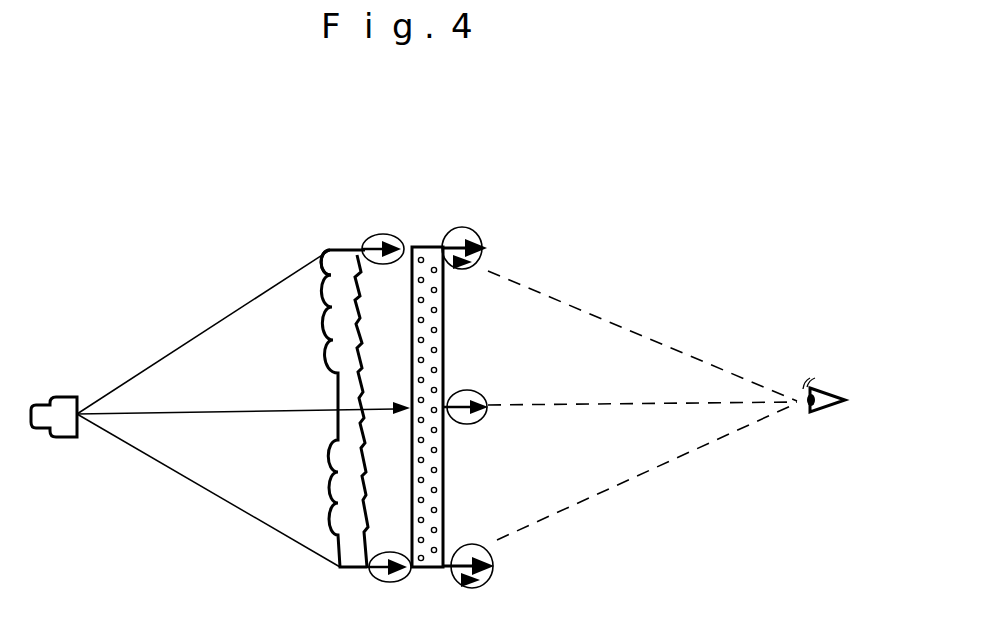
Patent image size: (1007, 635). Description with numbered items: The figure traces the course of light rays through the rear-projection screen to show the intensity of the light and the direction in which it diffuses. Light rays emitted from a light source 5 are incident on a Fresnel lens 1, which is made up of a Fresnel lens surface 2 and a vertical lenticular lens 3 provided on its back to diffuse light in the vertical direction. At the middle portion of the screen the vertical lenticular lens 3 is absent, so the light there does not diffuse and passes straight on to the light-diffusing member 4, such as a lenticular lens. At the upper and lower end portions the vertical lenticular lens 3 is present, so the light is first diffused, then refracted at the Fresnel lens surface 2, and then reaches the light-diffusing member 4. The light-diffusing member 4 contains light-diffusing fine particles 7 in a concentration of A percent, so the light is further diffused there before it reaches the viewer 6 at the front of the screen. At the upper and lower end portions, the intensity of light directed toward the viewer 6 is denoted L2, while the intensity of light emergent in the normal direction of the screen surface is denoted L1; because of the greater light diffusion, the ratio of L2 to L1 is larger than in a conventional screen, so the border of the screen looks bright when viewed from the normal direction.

The Fresnel lens 1 is at (336, 366).
The Fresnel lens surface 2 is at (367, 311).
The vertical lenticular lens 3 is at (328, 291).
The light-diffusing member 4 is at (450, 364).
The light source 5 is at (58, 397).
The viewer 6 is at (824, 392).
The light-diffusing fine particles 7 is at (437, 247).
The intensity of light emergent to the normal direction of the screen surface L1 is at (466, 230).
The intensity of light directed toward the viewer L2 is at (457, 266).